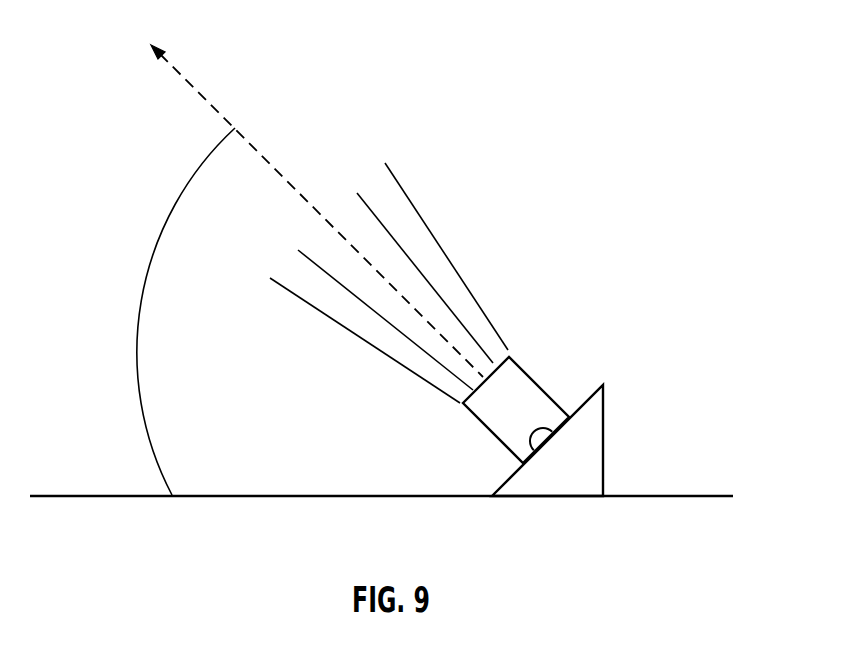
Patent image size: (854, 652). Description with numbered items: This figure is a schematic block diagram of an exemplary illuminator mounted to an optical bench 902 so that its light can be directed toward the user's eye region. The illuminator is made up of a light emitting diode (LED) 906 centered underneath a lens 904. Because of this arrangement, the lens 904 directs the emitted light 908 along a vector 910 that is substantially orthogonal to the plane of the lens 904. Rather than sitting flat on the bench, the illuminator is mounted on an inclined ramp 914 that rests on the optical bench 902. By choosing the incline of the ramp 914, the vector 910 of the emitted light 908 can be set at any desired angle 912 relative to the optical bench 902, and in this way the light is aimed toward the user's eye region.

The optical bench 902 is at (712, 494).
The lens 904 is at (530, 372).
The light emitting diode (LED) 906 is at (517, 446).
The emitted light 908 is at (417, 212).
The vector 910 is at (202, 93).
The angle 912 is at (167, 223).
The inclined ramp 914 is at (603, 457).